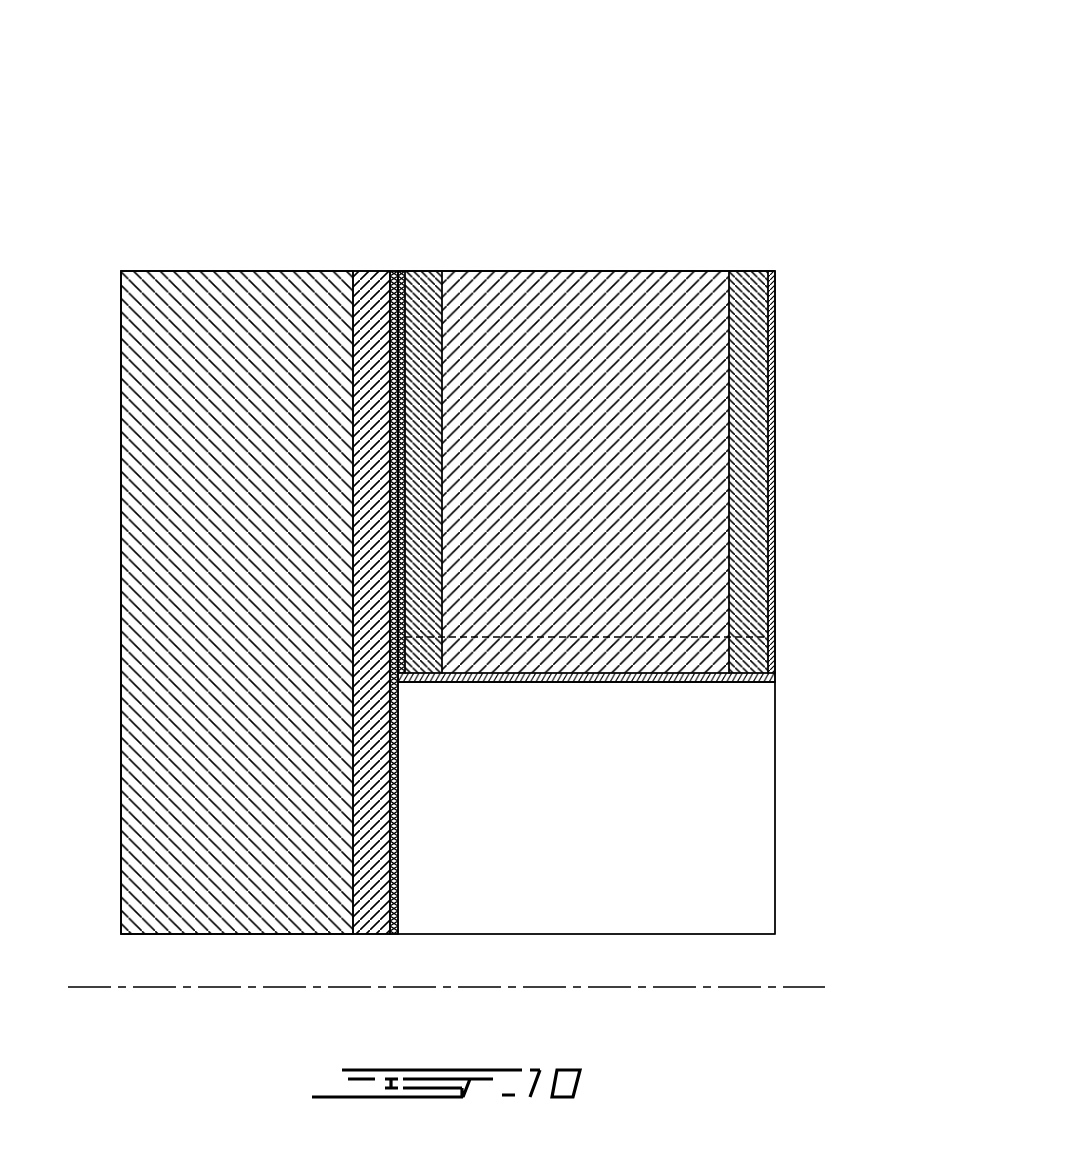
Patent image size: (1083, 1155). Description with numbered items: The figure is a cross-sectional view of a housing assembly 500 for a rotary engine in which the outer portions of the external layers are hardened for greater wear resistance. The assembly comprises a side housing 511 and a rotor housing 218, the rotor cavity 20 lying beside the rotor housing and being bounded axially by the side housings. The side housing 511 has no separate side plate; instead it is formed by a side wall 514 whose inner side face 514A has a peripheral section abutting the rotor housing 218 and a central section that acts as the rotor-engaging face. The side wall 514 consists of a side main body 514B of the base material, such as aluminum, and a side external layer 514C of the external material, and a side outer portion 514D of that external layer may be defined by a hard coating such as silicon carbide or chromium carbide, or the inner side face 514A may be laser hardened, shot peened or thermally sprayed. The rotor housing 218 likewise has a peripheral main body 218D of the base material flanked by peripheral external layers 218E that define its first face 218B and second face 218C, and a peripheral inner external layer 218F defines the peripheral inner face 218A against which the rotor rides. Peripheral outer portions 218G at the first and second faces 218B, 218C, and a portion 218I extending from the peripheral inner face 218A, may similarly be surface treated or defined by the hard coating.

The housing assembly 500 is at (662, 153).
The rotor cavity 20 is at (717, 872).
The rotor housing 218 is at (677, 515).
The peripheral inner face 218A is at (588, 684).
The first face 218B is at (398, 503).
The second face 218C is at (777, 397).
The peripheral main body 218D is at (729, 232).
The peripheral external layers 218E is at (442, 232).
The peripheral inner external layer 218F is at (795, 637).
The peripheral outer portions 218G is at (399, 338).
The portion of the rotor housing 218I is at (700, 684).
The side housing 511 is at (182, 773).
The side wall 514 is at (215, 413).
The inner side face 514A is at (398, 773).
The side main body 514B is at (353, 232).
The side external layer 514C is at (390, 232).
The side outer portion 514D is at (387, 309).